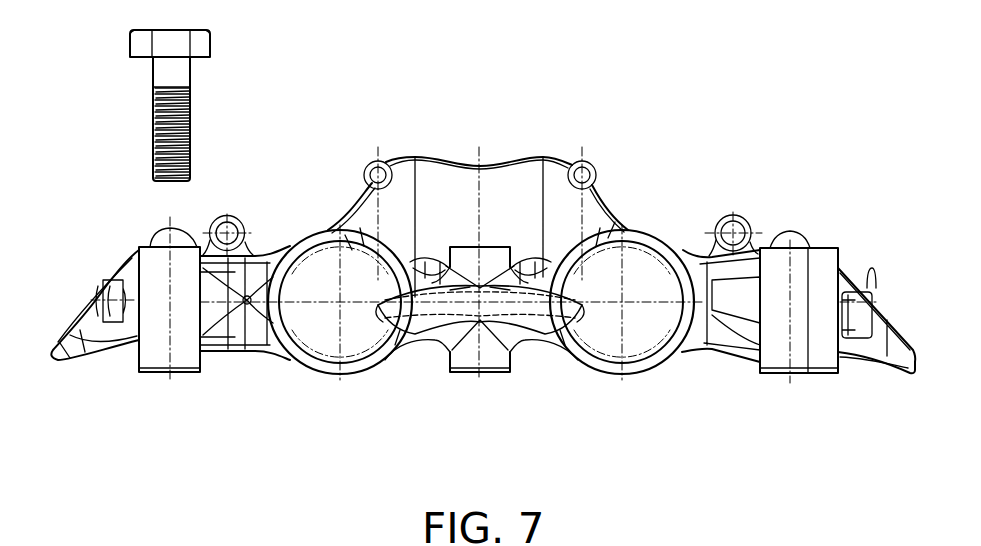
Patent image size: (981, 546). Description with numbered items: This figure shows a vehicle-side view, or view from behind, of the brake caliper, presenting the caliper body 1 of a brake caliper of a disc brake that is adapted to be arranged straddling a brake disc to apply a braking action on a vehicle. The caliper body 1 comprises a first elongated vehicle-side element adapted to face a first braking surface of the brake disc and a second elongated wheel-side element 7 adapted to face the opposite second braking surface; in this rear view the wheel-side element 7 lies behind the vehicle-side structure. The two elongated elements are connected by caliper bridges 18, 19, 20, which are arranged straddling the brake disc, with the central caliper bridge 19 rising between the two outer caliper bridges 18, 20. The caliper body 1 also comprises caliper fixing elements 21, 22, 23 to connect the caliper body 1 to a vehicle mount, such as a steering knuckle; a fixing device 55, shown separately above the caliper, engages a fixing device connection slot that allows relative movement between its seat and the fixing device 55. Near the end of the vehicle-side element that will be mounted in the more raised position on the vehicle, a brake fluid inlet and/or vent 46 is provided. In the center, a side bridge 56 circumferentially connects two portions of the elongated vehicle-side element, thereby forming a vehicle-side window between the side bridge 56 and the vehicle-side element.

The caliper body 1 is at (671, 188).
The second elongated wheel-side element 7 is at (537, 247).
The caliper bridge 18 is at (127, 262).
The caliper bridge 19 is at (498, 163).
The caliper bridge 20 is at (845, 290).
The caliper fixing element 21 is at (157, 338).
The caliper fixing element 22 is at (470, 350).
The caliper fixing element 23 is at (817, 347).
The brake fluid inlet and/or vent 46 is at (113, 310).
The fixing device 55 is at (190, 137).
The side bridge 56 is at (413, 320).